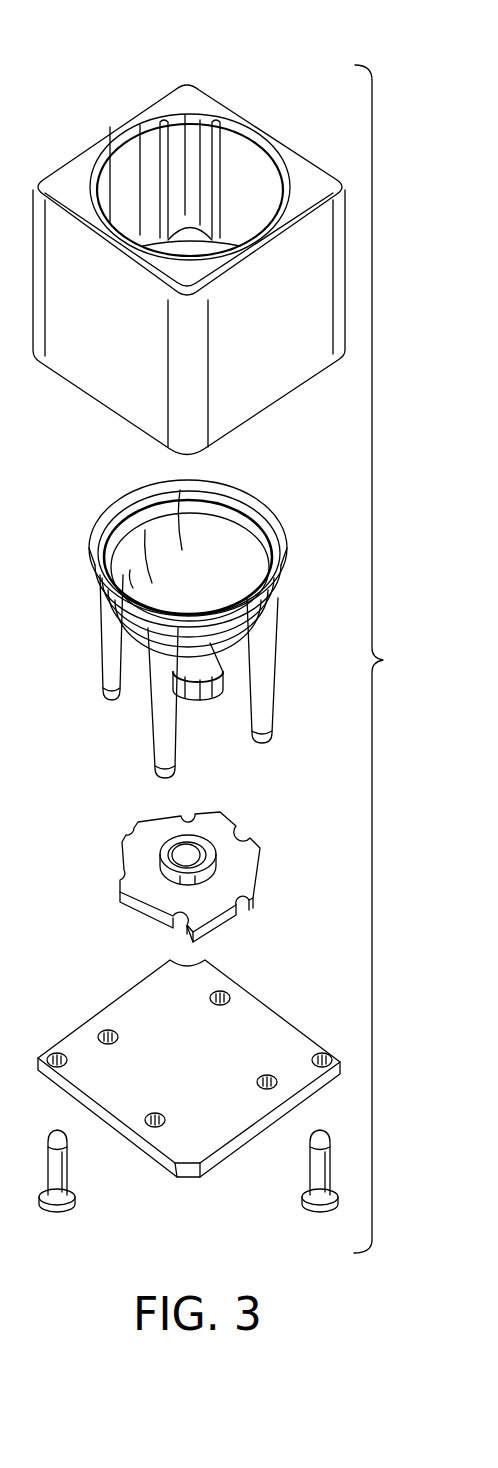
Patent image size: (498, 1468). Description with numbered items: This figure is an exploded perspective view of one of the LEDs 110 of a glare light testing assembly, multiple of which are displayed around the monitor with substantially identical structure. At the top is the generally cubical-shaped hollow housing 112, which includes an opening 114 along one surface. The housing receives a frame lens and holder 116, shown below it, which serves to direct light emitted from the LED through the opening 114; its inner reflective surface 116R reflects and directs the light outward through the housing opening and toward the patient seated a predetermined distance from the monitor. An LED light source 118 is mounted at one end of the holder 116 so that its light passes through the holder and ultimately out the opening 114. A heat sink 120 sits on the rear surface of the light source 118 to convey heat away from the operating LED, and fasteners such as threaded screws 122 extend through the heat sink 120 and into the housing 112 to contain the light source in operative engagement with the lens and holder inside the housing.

The LED 110 is at (383, 660).
The housing 112 is at (133, 113).
The opening 114 is at (240, 162).
The frame lens and holder 116 is at (128, 500).
The inner reflective surface 116R is at (214, 542).
The LED light source 118 is at (140, 857).
The heat sink 120 is at (140, 1010).
The threaded screws 122 is at (308, 1177).